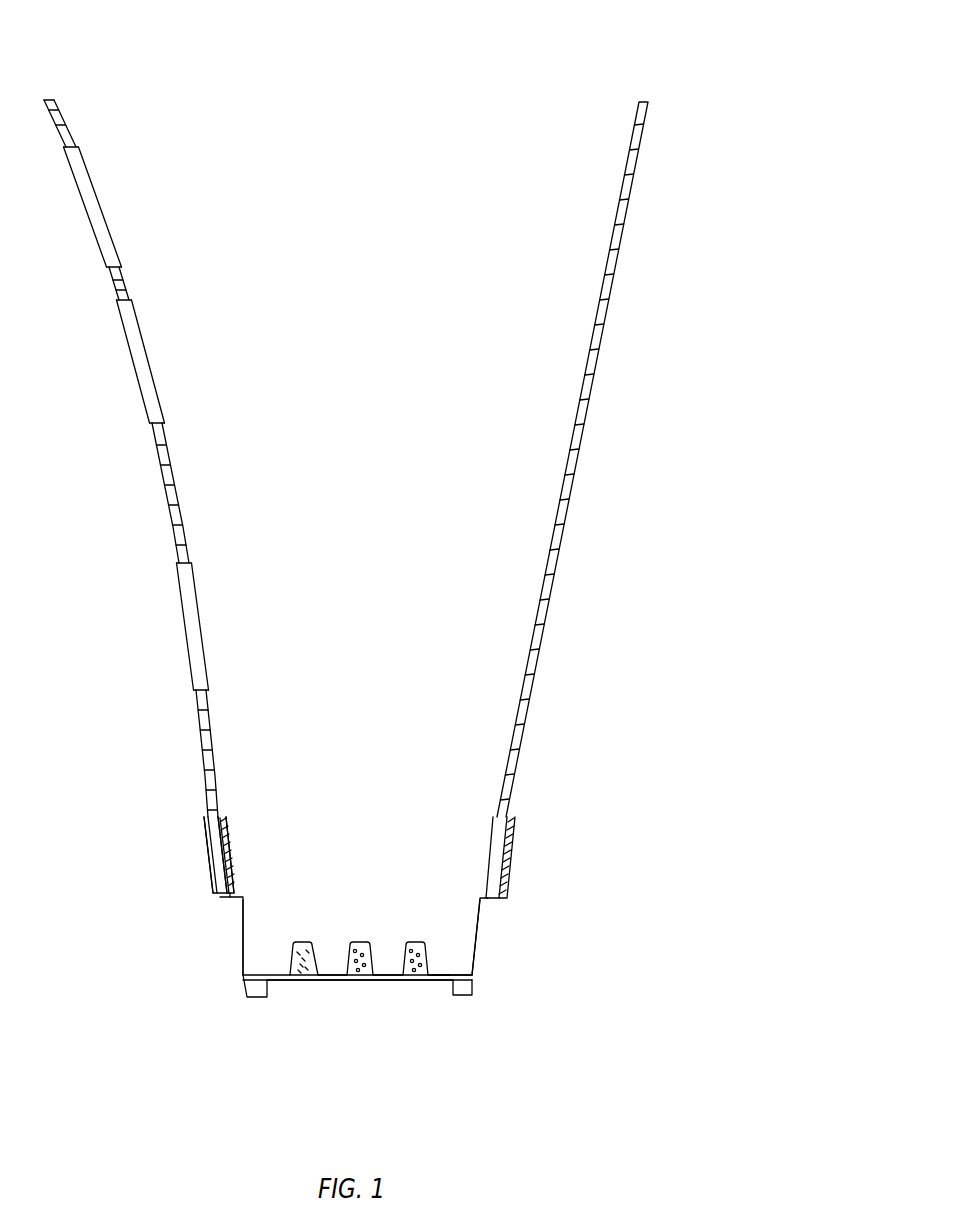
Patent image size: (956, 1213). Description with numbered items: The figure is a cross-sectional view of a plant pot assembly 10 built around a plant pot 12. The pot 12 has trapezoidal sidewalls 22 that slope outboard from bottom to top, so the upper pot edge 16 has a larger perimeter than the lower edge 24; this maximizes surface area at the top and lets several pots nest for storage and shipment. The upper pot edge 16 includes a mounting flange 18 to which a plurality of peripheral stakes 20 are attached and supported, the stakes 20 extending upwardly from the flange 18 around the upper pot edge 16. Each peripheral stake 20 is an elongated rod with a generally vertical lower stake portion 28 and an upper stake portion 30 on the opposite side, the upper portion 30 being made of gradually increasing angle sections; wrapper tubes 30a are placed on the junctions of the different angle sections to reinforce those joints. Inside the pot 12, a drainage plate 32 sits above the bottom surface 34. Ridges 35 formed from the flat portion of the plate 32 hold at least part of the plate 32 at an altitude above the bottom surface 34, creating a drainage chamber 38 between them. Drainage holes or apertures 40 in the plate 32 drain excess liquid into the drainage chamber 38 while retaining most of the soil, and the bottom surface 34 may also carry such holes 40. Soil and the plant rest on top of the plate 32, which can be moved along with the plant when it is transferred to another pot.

The plant pot assembly 10 is at (573, 101).
The plant pot 12 is at (478, 955).
The upper pot edge 16 is at (220, 813).
The mounting flange 18 is at (207, 813).
The peripheral stakes 20 is at (575, 475).
The sidewalls 22 is at (243, 935).
The lower edge 24 is at (477, 995).
The lower stake portion 28 is at (215, 853).
The upper stake portion 30 is at (555, 572).
The wrapper tubes 30a is at (104, 196).
The drainage plate 32 is at (452, 975).
The bottom surface 34 is at (440, 977).
The ridges 35 is at (410, 952).
The drainage chamber 38 is at (422, 977).
The drainage holes 40 is at (365, 975).